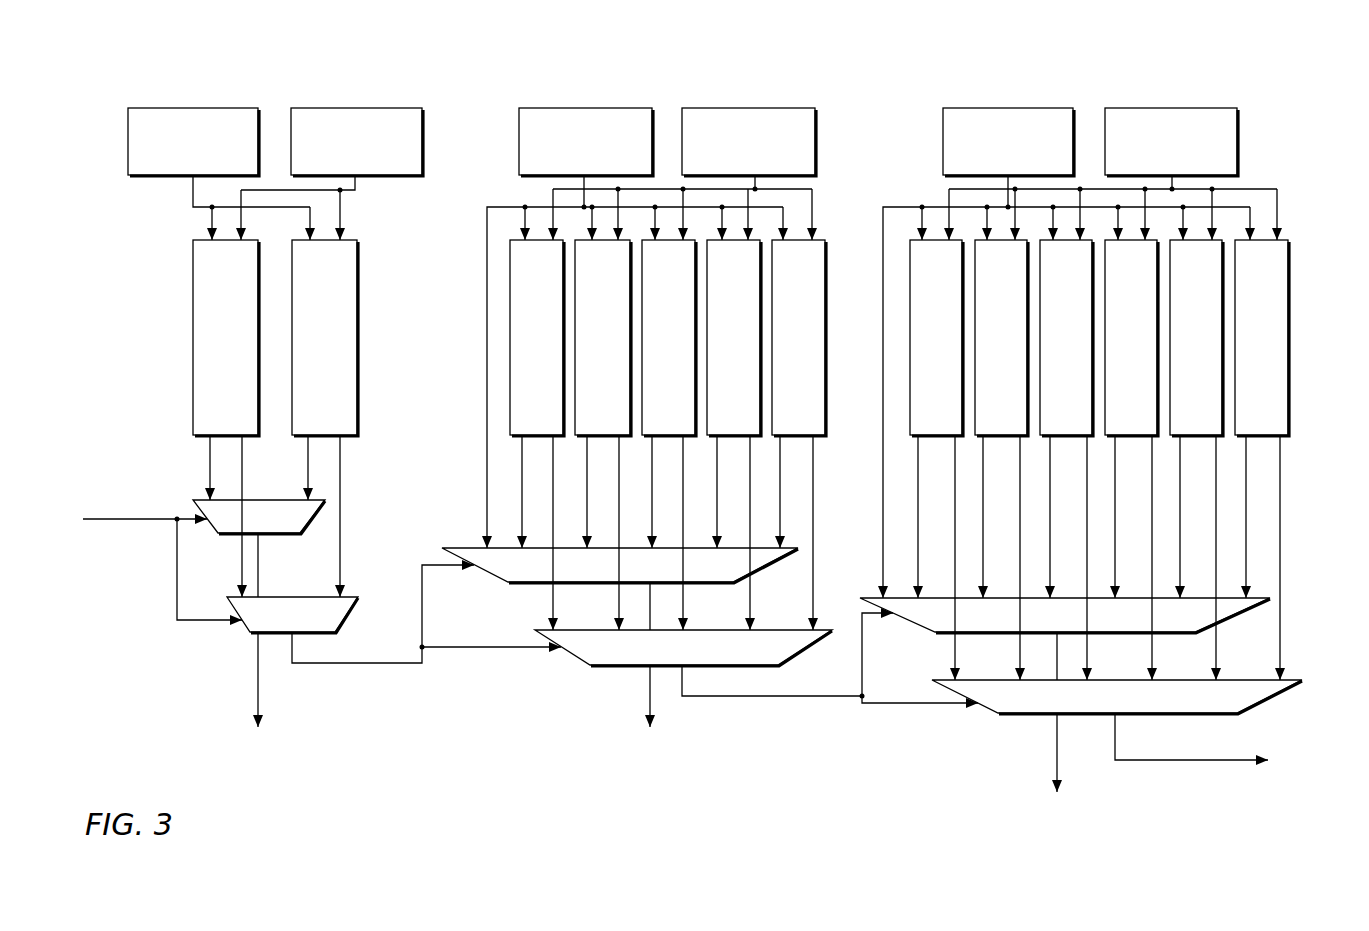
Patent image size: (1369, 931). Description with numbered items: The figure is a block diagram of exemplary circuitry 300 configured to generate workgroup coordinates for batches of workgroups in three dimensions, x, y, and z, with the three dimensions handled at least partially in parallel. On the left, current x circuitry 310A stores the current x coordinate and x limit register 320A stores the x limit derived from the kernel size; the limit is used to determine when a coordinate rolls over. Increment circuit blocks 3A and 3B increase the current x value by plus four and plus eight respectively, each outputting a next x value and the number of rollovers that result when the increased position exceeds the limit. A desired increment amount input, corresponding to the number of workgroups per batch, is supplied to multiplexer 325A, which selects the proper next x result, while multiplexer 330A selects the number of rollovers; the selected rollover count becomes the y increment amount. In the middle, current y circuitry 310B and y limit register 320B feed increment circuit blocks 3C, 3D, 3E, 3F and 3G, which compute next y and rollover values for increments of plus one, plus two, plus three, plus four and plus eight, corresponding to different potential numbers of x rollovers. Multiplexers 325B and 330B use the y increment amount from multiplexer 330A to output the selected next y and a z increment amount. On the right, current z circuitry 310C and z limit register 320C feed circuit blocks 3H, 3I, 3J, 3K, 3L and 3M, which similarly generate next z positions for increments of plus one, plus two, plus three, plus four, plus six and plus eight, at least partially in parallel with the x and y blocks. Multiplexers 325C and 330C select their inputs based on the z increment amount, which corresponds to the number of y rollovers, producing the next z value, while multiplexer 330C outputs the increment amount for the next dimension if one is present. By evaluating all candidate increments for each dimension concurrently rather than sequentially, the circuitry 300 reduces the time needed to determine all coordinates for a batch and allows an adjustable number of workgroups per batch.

The circuitry 300 is at (100, 81).
The current x circuitry 310A is at (169, 163).
The x limit register 320A is at (332, 163).
The current y circuitry 310B is at (561, 163).
The y limit register 320B is at (724, 163).
The current z circuitry 310C is at (984, 163).
The z limit register 320C is at (1147, 163).
The increment circuit block 3A is at (212, 360).
The increment circuit block 3B is at (311, 360).
The increment circuit block 3C is at (523, 360).
The increment circuit block 3D is at (589, 360).
The increment circuit block 3E is at (655, 360).
The increment circuit block 3F is at (720, 360).
The increment circuit block 3G is at (785, 360).
The circuit block 3H is at (922, 360).
The circuit block 3I is at (991, 360).
The circuit block 3J is at (1053, 360).
The circuit block 3K is at (1117, 360).
The circuit block 3L is at (1183, 360).
The circuit block 3M is at (1245, 360).
The multiplexer 325A is at (235, 528).
The multiplexer 330A is at (268, 626).
The multiplexer 325B is at (626, 576).
The multiplexer 330B is at (659, 656).
The multiplexer 325C is at (1033, 625).
The multiplexer 330C is at (1093, 706).